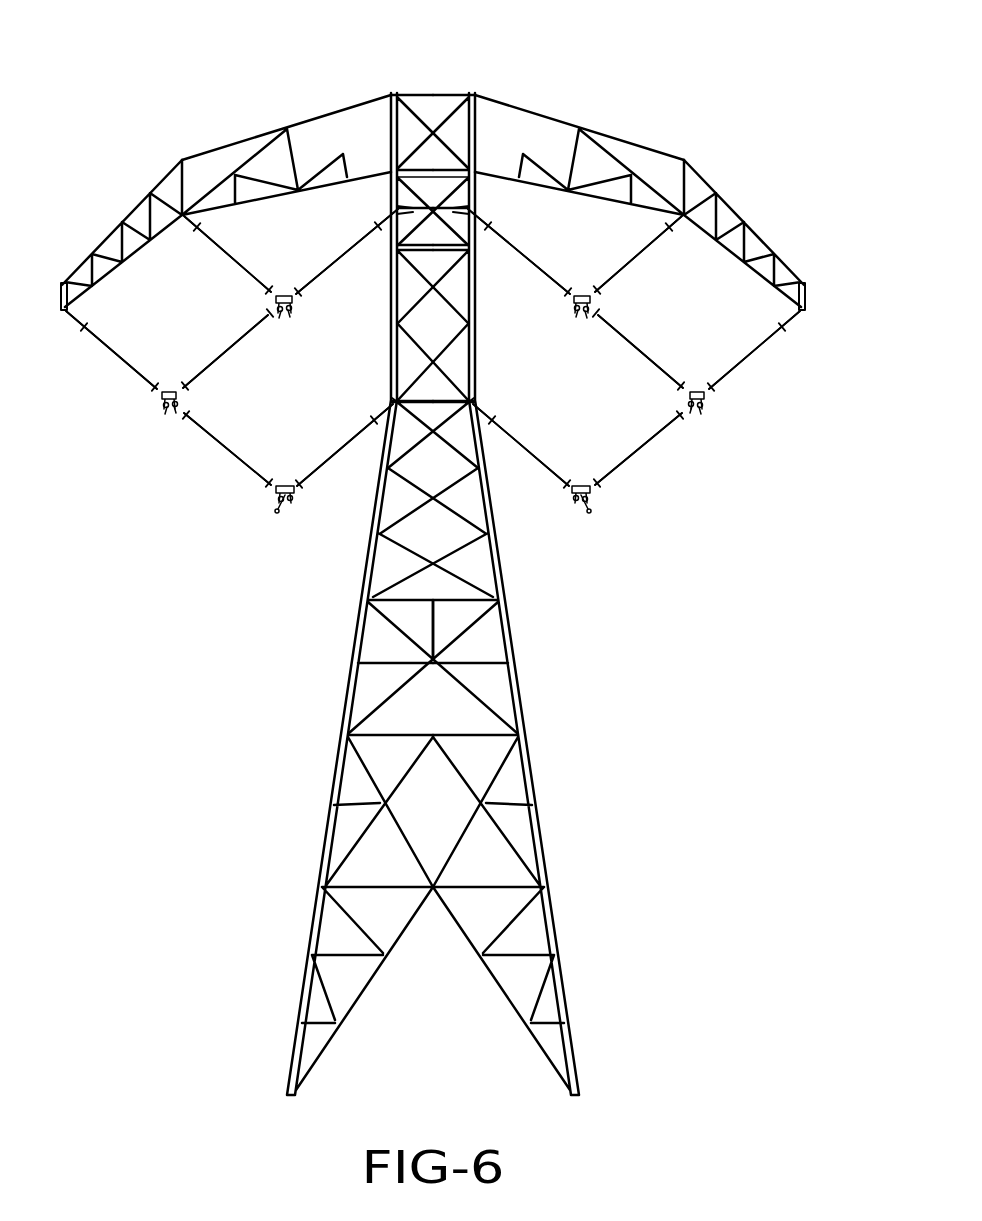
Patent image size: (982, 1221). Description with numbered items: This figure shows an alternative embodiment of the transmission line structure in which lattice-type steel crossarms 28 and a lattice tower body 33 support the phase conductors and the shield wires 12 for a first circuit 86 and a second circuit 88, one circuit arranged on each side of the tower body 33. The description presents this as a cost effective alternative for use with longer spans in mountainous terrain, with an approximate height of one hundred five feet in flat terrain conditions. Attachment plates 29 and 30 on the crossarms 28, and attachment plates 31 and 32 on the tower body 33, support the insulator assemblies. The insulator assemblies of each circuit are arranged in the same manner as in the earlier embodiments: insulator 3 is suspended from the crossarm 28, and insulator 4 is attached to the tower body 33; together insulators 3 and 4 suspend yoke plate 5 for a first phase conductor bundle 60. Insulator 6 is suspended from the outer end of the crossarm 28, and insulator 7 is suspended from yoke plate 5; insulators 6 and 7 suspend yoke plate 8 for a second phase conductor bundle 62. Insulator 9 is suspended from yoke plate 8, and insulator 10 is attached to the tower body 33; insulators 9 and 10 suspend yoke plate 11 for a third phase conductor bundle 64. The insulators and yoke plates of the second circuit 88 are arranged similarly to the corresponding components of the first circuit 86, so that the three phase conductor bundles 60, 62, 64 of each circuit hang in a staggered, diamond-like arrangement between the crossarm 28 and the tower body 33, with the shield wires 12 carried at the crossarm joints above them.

The insulator 3 is at (247, 270).
The insulator 4 is at (323, 270).
The yoke plate 5 is at (290, 308).
The insulator 6 is at (110, 355).
The insulator 7 is at (227, 348).
The yoke plate 8 is at (165, 407).
The insulator 9 is at (223, 440).
The insulator 10 is at (332, 455).
The yoke plate 11 is at (288, 505).
The shield wires 12 is at (432, 180).
The lattice-type steel crossarm 28 is at (263, 133).
The attachment plate 29 is at (62, 298).
The attachment plate 30 is at (178, 192).
The attachment plate 31 is at (413, 210).
The attachment plate 32 is at (396, 398).
The tower body 33 is at (550, 897).
The first phase conductor bundle 60 is at (282, 322).
The second phase conductor bundle 62 is at (176, 425).
The third phase conductor bundle 64 is at (277, 521).
The first circuit 86 is at (200, 657).
The second circuit 88 is at (634, 485).